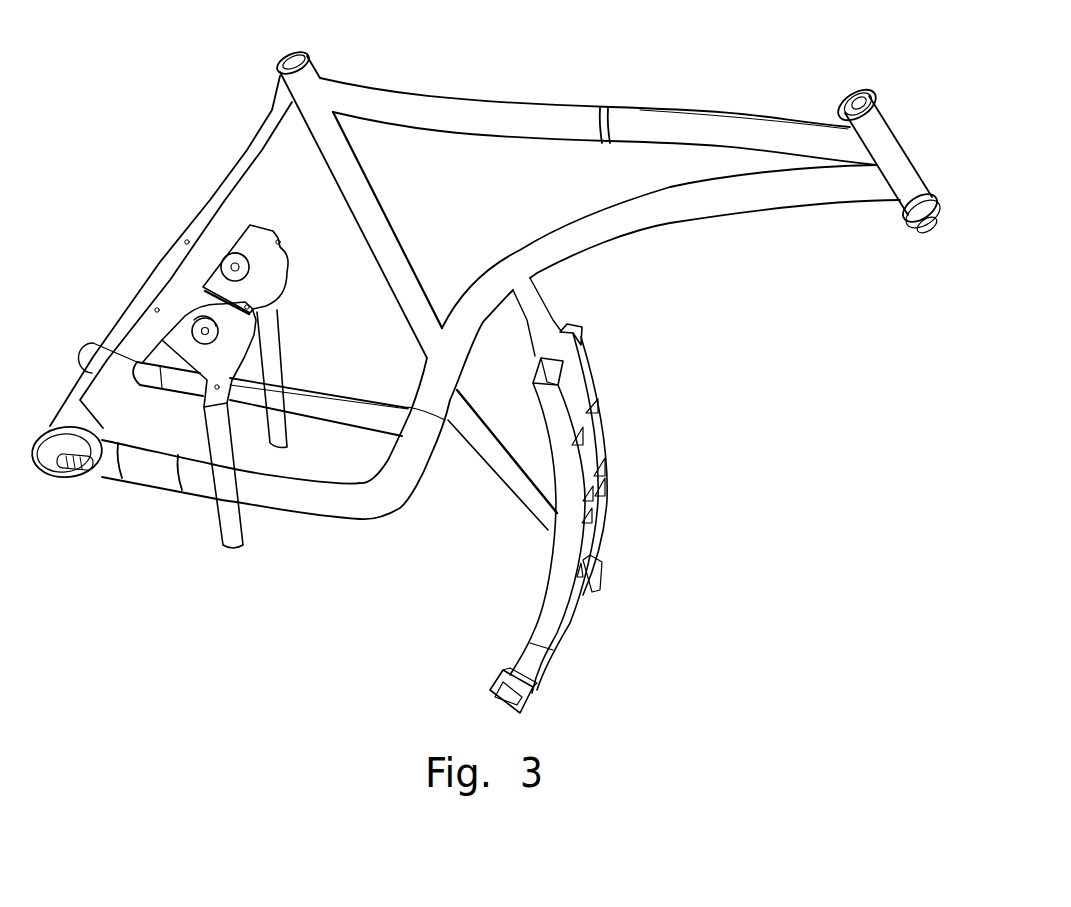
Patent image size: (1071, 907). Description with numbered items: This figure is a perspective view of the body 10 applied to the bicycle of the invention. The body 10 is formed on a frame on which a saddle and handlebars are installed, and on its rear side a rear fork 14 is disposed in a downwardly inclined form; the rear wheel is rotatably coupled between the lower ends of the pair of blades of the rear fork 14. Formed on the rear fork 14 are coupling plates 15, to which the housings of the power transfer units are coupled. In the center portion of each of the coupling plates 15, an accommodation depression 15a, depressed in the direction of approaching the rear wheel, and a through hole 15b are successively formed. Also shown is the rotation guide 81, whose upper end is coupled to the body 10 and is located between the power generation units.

The body 10 is at (541, 90).
The rear fork 14 is at (223, 173).
The coupling plates 15 is at (270, 277).
The accommodation depression 15a is at (203, 330).
The through hole 15b is at (196, 326).
The rotation guide 81 is at (610, 362).